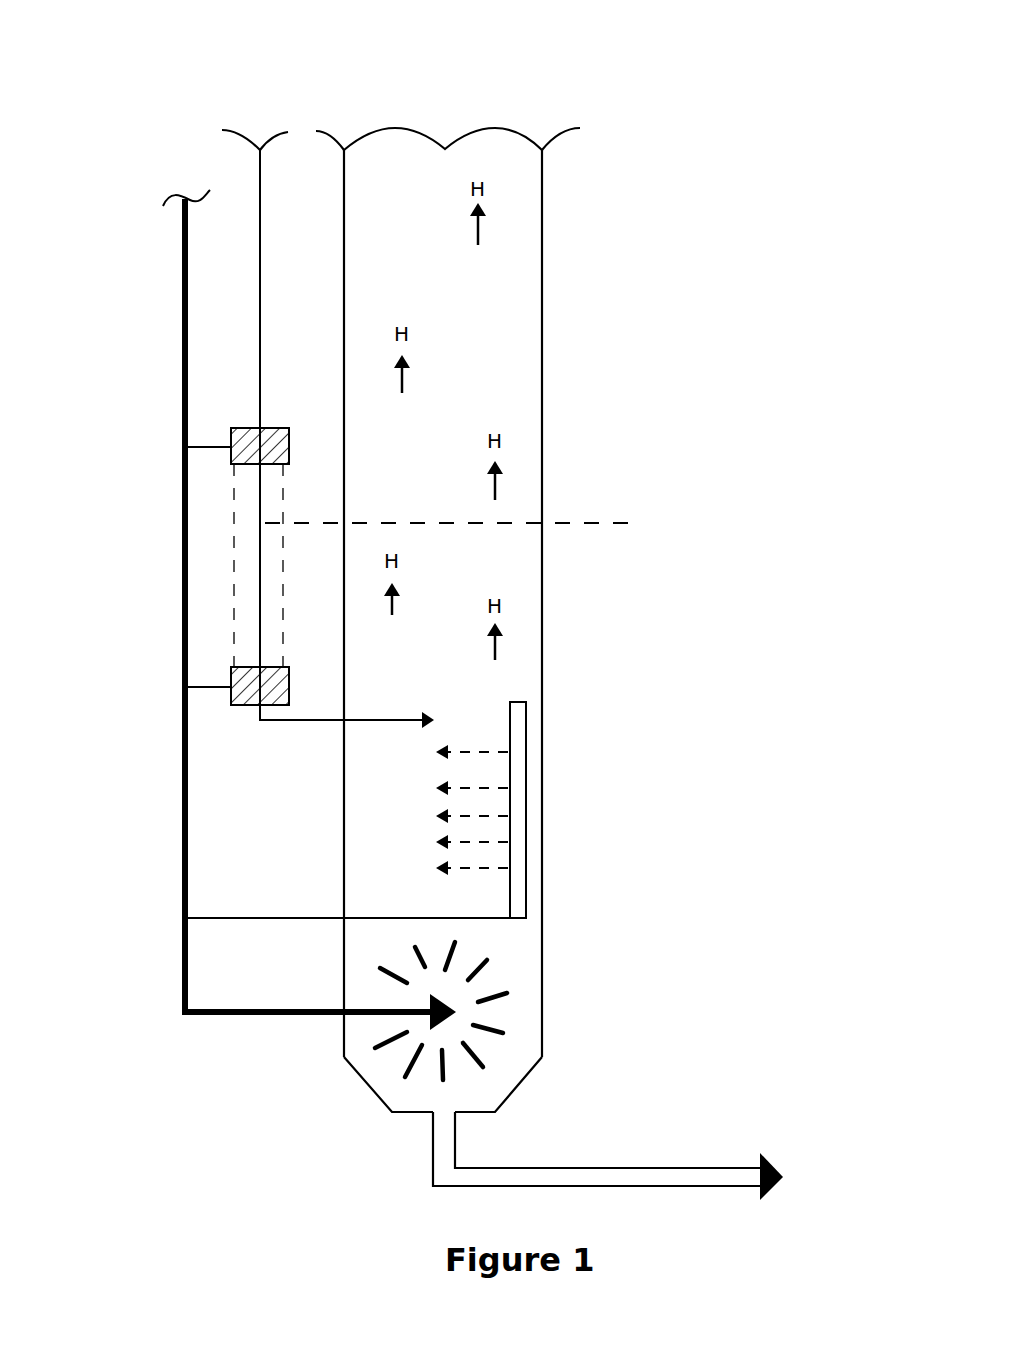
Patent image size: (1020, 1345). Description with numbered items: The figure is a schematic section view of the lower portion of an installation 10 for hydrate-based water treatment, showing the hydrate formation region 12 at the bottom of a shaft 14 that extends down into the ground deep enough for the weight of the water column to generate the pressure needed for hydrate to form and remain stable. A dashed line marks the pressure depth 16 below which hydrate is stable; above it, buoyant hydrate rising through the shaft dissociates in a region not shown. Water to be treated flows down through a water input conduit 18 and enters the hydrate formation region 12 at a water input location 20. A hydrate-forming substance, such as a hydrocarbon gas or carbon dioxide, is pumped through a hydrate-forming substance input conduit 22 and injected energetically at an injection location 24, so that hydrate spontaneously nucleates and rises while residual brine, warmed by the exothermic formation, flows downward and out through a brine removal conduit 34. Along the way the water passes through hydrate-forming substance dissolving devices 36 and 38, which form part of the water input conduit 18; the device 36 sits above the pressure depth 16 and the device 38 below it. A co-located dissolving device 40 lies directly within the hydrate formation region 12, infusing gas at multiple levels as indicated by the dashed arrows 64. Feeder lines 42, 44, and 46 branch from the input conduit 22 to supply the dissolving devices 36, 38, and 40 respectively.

The installation 10 is at (523, 82).
The hydrate formation region 12 is at (558, 667).
The shaft 14 is at (542, 272).
The pressure depth 16 is at (476, 525).
The water input conduit 18 is at (260, 226).
The water input location 20 is at (404, 698).
The hydrate-forming substance input conduit 22 is at (183, 257).
The hydrate-forming substance injection location 24 is at (414, 995).
The brine removal conduit 34 is at (595, 1162).
The hydrate-forming substance dissolving device 36 is at (272, 429).
The hydrate-forming substance dissolving device 38 is at (280, 667).
The hydrate-forming substance dissolving device 40 is at (518, 702).
The feeder line 42 is at (190, 445).
The feeder line 44 is at (190, 685).
The feeder line 46 is at (253, 918).
The dashed arrows 64 is at (420, 738).